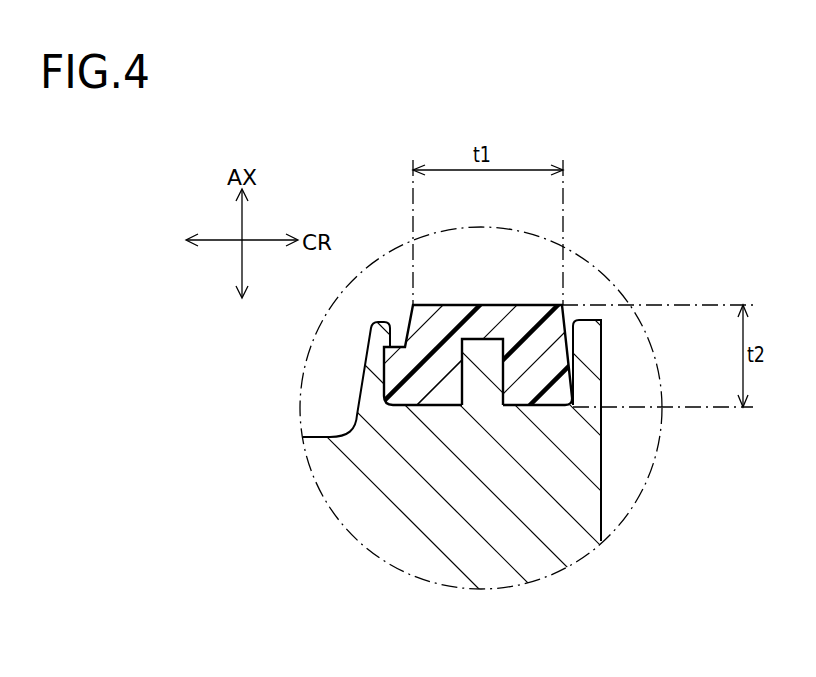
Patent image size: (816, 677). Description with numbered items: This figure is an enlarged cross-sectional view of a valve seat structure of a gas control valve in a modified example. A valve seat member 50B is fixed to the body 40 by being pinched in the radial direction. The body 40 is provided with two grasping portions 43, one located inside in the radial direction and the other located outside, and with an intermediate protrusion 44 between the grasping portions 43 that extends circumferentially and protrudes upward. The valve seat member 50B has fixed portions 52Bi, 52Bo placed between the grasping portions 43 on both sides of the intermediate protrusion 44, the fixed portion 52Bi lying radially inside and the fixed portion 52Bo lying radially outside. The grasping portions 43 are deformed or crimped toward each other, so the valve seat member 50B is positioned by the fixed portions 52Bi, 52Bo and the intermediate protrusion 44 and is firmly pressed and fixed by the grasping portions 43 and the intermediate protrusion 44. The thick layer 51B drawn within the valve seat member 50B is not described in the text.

The body 40 is at (385, 518).
The grasping portion 43 is at (371, 343).
The intermediate protrusion 44 is at (485, 392).
The valve seat member 50B is at (459, 300).
The low-friction layer 51B is at (492, 306).
The fixed portion 52Bi is at (423, 385).
The fixed portion 52Bo is at (522, 388).